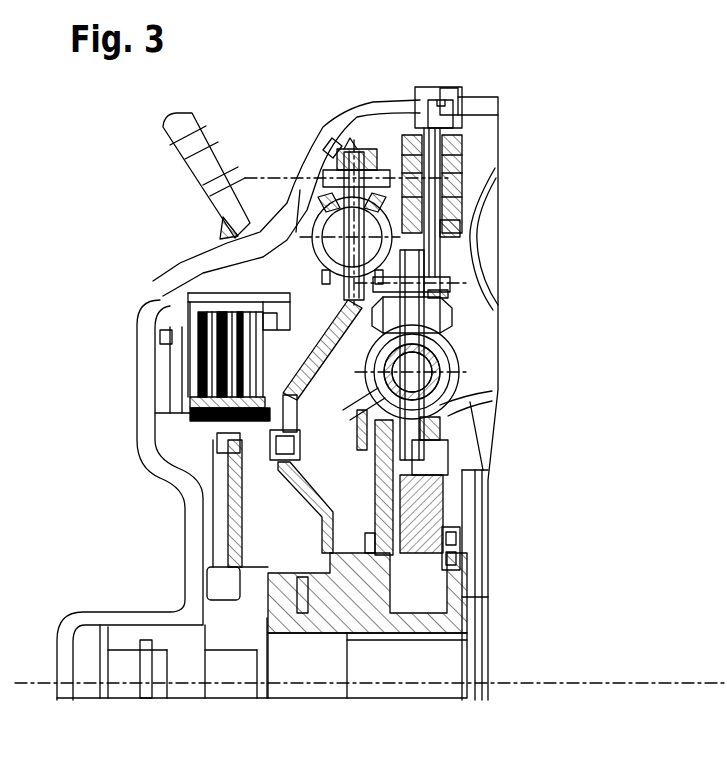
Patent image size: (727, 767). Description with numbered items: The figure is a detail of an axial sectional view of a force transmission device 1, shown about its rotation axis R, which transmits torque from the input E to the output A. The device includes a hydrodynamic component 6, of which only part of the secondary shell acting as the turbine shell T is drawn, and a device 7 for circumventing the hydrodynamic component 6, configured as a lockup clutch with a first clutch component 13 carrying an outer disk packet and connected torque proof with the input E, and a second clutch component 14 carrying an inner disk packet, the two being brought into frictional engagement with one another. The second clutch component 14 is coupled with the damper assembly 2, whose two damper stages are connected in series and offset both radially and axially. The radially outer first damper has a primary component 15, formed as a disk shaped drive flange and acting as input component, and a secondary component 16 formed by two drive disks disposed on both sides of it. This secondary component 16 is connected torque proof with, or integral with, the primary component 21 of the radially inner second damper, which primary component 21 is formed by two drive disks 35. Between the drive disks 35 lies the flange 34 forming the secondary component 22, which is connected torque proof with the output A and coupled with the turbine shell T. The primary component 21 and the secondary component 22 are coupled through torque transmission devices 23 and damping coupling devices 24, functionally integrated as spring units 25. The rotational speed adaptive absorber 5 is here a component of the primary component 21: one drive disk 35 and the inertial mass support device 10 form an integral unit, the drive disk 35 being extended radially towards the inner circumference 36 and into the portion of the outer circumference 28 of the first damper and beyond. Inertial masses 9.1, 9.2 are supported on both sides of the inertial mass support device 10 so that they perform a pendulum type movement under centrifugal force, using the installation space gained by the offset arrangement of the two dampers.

The force transmission device 1 is at (449, 58).
The damper assembly 2 is at (372, 134).
The rotational speed adaptive absorber 5 is at (471, 124).
The hydrodynamic component 6 is at (542, 199).
The device for circumventing the hydrodynamic component 7 is at (176, 286).
The inertial mass 9.1 is at (465, 143).
The inertial mass 9.2 is at (412, 110).
The inertial mass support device 10 is at (464, 243).
The first clutch component 13 is at (206, 290).
The second clutch component 14 is at (190, 406).
The primary component 15 is at (334, 353).
The secondary component 16 is at (322, 142).
The primary component 21 is at (454, 313).
The secondary component 22 is at (461, 506).
The torque transmission devices 23 is at (487, 355).
The damping coupling devices 24 is at (412, 372).
The spring units 25 is at (458, 358).
The outer circumference 28 is at (352, 148).
The flange 34 is at (374, 486).
The drive disk 35 is at (358, 410).
The inner circumference 36 is at (347, 150).
The turbine shell T is at (482, 266).
The input E is at (57, 662).
The rotation axis R is at (368, 698).
The output A is at (422, 663).